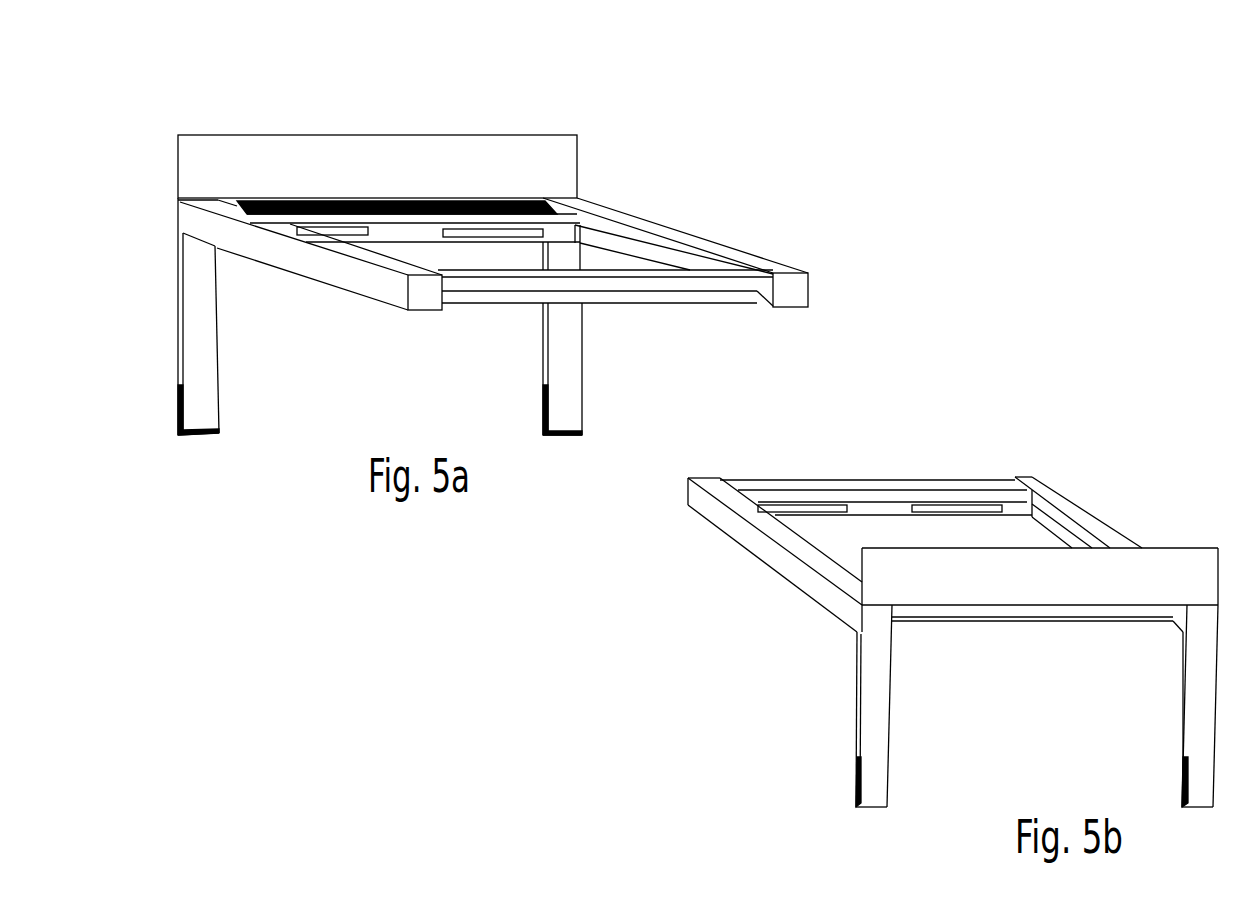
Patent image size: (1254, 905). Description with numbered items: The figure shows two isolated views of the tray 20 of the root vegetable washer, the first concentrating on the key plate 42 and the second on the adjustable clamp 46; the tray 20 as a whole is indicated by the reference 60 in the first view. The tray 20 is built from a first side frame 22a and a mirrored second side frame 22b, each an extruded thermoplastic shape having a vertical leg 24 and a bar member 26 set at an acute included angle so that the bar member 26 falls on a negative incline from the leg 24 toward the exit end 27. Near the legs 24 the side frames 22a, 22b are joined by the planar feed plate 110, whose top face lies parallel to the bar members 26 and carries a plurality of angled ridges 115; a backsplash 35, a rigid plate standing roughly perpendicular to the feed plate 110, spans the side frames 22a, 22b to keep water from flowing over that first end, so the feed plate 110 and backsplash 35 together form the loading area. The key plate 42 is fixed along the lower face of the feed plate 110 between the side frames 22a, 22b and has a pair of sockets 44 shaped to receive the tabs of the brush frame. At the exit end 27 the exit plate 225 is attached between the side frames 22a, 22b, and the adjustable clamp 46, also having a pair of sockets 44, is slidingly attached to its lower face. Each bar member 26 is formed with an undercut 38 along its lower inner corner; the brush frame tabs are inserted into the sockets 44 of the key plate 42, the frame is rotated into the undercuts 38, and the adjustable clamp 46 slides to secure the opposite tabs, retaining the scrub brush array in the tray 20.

In FIG. 5a, the tray 20 is at (224, 92).
In FIG. 5b, the tray 20 is at (646, 673).
In FIG. 5a, the table top assembly 60 is at (106, 106).
In FIG. 5a, the first side frame 22a is at (661, 222).
In FIG. 5b, the first side frame 22a is at (738, 529).
In FIG. 5a, the second side frame 22b is at (183, 228).
In FIG. 5b, the second side frame 22b is at (1042, 490).
In FIG. 5a, the vertical leg 24 is at (195, 333).
In FIG. 5b, the vertical leg 24 is at (877, 725).
In FIG. 5a, the bar member 26 is at (315, 265).
In FIG. 5b, the bar member 26 is at (812, 583).
In FIG. 5b, the exit end 27 is at (708, 480).
In FIG. 5a, the backsplash 35 is at (479, 135).
In FIG. 5b, the backsplash 35 is at (1168, 548).
In FIG. 5a, the undercut 38 is at (667, 268).
In FIG. 5b, the undercut 38 is at (1070, 547).
In FIG. 5a, the key plate 42 is at (557, 235).
In FIG. 5a, the sockets 44 is at (523, 230).
In FIG. 5b, the sockets 44 is at (943, 505).
In FIG. 5a, the adjustable clamp 46 is at (490, 298).
In FIG. 5b, the adjustable clamp 46 is at (875, 510).
In FIG. 5a, the feed plate 110 is at (282, 219).
In FIG. 5a, the angled ridges 115 is at (237, 202).
In FIG. 5a, the exit plate 225 is at (688, 284).
In FIG. 5b, the exit plate 225 is at (822, 483).